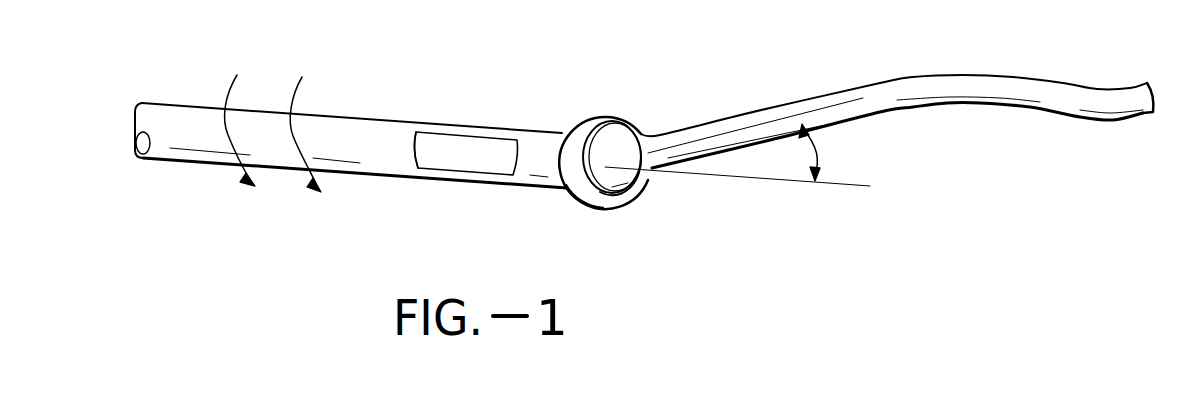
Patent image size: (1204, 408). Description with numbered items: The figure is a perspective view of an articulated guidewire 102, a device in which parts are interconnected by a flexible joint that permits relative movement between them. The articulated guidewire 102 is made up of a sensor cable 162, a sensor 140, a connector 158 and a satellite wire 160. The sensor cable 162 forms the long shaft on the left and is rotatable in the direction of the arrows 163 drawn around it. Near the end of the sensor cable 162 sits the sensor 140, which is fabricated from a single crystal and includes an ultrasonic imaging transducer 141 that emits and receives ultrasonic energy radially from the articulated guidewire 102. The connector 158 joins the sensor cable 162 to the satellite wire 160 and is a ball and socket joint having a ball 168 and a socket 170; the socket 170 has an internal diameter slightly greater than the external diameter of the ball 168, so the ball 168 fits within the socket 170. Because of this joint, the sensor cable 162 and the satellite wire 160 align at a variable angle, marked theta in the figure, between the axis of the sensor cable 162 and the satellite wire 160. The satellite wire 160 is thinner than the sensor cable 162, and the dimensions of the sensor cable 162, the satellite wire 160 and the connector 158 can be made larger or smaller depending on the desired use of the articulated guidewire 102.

The articulated guidewire 102 is at (532, 53).
The sensor 140 is at (485, 152).
The ultrasonic imaging transducer 141 is at (442, 140).
The connector 158 is at (602, 119).
The satellite wire 160 is at (713, 150).
The sensor cable 162 is at (502, 187).
The arrows 163 is at (271, 120).
The ball 168 is at (637, 187).
The socket 170 is at (572, 200).